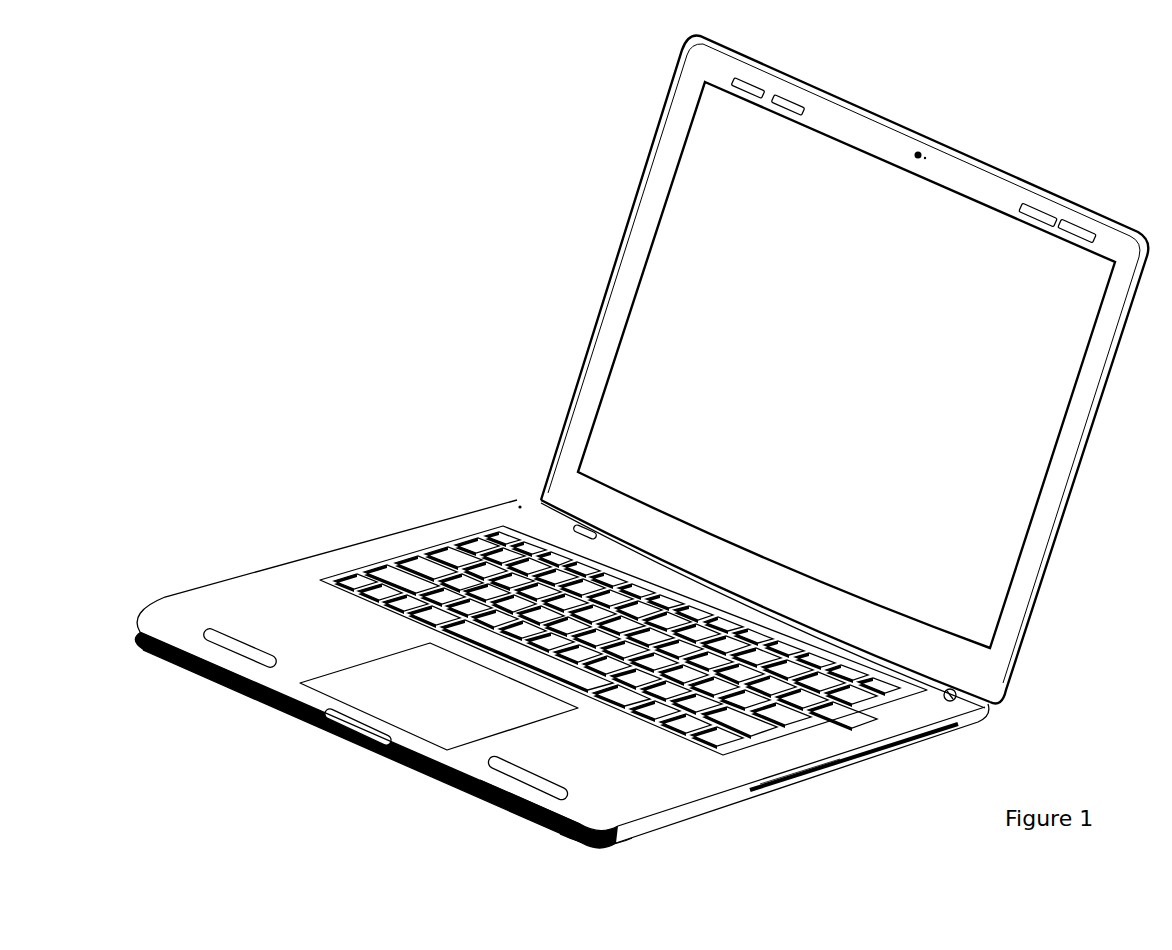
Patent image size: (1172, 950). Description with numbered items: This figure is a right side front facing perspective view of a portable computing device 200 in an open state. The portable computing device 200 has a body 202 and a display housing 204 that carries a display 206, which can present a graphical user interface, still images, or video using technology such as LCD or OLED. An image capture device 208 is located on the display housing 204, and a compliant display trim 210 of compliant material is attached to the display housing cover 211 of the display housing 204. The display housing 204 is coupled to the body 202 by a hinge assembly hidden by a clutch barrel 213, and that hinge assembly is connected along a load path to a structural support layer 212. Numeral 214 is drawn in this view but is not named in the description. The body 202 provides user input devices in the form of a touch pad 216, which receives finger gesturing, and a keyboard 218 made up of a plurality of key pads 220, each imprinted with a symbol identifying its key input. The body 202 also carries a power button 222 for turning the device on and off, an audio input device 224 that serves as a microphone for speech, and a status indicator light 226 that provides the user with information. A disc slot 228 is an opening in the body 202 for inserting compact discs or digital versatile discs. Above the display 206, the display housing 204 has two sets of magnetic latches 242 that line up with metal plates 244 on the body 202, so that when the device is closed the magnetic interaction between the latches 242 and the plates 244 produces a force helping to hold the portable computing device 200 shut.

The portable computing device 200 is at (388, 240).
The body 202 is at (414, 478).
The display housing 204 is at (1048, 612).
The display 206 is at (846, 365).
The image capture device 208 is at (928, 150).
The compliant display trim 210 is at (1057, 490).
The display housing cover 211 is at (1093, 438).
The structural support layer 212 is at (703, 825).
The clutch barrel 213 is at (597, 535).
The corner of base 214 is at (617, 846).
The touch pad 216 is at (439, 696).
The keyboard 218 is at (477, 520).
The key pads 220 is at (412, 577).
The power button 222 is at (960, 702).
The audio input device 224 is at (516, 500).
The status indicator light 226 is at (523, 817).
The disc slot 228 is at (838, 776).
The magnetic latches 242 is at (758, 82).
The metal plates 244 is at (497, 769).